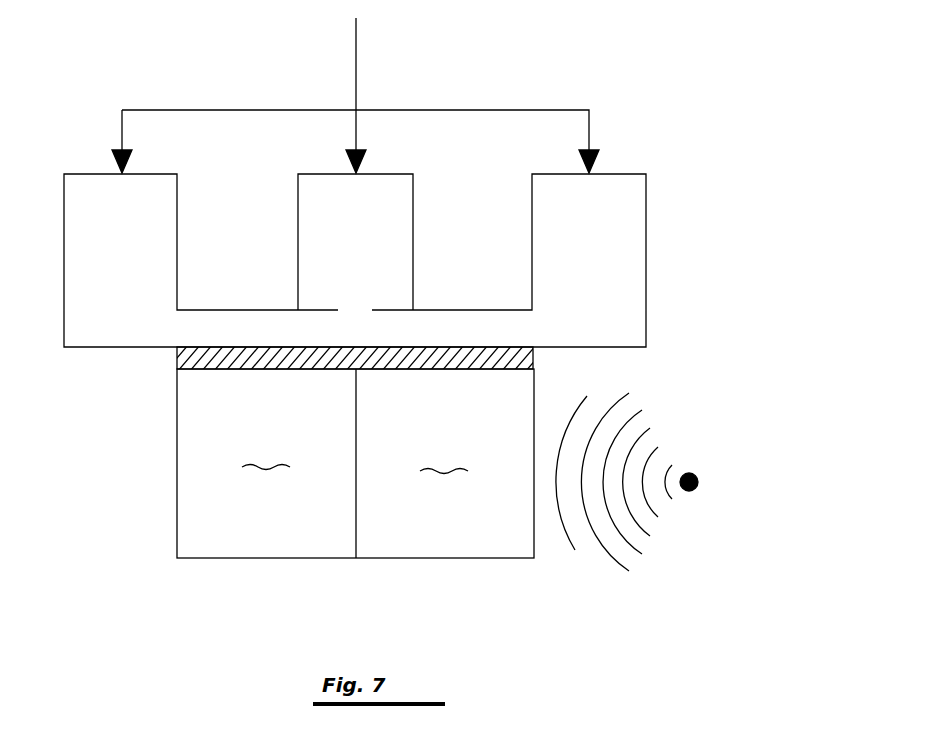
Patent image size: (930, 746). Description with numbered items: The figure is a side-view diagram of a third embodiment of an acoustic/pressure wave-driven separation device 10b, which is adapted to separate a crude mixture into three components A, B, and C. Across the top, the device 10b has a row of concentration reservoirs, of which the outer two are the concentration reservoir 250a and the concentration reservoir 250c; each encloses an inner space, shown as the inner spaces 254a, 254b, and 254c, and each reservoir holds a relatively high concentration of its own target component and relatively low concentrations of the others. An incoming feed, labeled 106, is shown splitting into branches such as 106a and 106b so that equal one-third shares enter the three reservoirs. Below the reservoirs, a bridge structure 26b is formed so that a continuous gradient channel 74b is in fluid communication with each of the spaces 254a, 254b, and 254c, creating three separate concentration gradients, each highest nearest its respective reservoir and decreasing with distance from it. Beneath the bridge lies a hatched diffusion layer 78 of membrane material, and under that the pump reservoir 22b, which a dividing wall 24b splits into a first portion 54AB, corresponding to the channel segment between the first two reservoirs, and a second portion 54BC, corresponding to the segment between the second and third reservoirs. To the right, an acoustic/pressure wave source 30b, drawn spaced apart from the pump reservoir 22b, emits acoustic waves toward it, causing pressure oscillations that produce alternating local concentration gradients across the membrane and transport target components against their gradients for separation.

The acoustic/pressure wave-driven separation device 10b is at (672, 94).
The inlet flow 106 is at (352, 63).
The inlet branch to chamber A 106a is at (121, 128).
The inlet distribution line 106b is at (358, 118).
The inner space 254a is at (88, 200).
The inner space 254b is at (320, 195).
The inner space 254c is at (555, 188).
The concentration reservoir 250a is at (180, 202).
The concentration reservoir 250c is at (648, 192).
The gradient channel 74b is at (194, 309).
The bridge structure 26b is at (246, 310).
The membrane / hatched layer 78 is at (478, 372).
The pump reservoir 22b is at (177, 495).
The dividing wall 24b is at (356, 505).
The first portion 54AB is at (266, 455).
The second portion 54BC is at (444, 459).
The acoustic/pressure wave source 30b is at (690, 474).